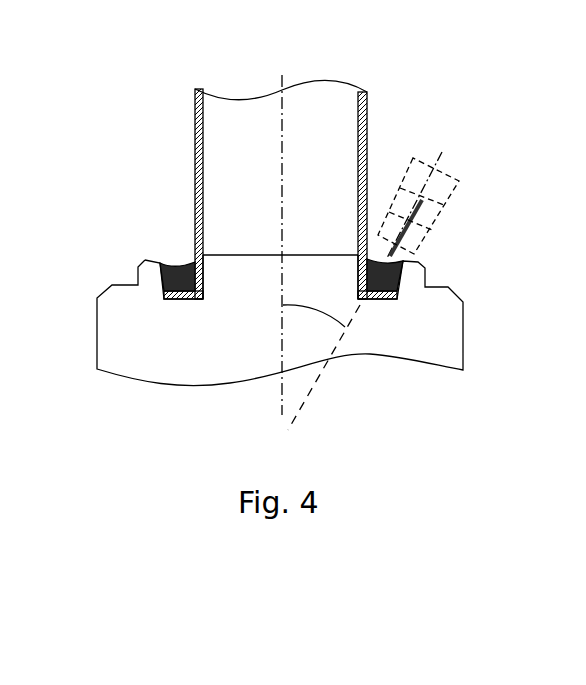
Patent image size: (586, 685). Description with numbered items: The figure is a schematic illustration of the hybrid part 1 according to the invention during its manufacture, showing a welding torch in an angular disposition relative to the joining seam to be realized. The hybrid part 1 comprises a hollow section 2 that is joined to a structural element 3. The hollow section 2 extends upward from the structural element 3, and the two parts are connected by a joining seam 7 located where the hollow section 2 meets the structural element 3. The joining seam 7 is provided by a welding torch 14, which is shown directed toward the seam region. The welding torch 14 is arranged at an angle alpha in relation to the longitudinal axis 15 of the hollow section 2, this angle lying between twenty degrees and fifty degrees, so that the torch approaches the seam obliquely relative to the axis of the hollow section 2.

The hybrid part 1 is at (133, 82).
The hollow section 2 is at (196, 155).
The structural element 3 is at (140, 317).
The joining seam 7 is at (145, 260).
The welding torch 14 is at (440, 212).
The longitudinal axis 15 is at (285, 162).